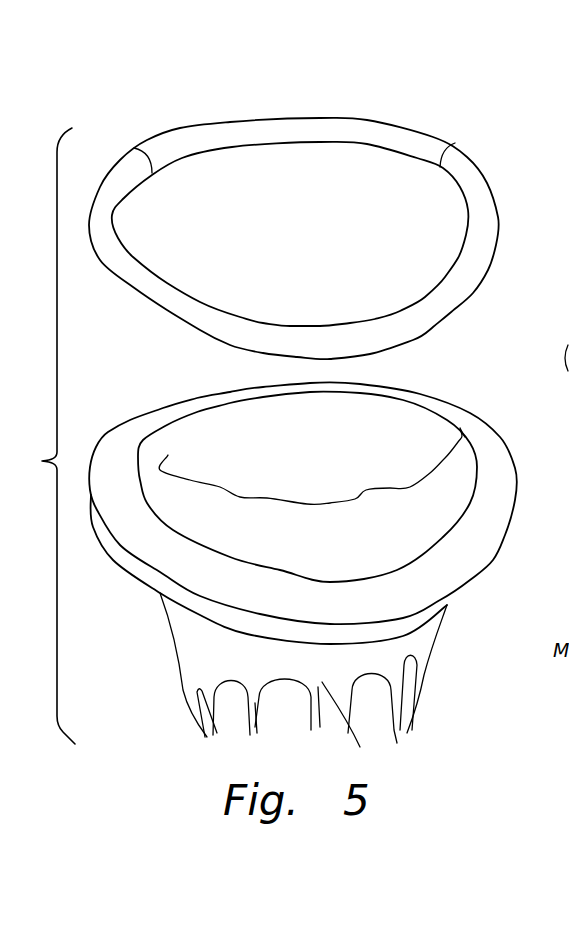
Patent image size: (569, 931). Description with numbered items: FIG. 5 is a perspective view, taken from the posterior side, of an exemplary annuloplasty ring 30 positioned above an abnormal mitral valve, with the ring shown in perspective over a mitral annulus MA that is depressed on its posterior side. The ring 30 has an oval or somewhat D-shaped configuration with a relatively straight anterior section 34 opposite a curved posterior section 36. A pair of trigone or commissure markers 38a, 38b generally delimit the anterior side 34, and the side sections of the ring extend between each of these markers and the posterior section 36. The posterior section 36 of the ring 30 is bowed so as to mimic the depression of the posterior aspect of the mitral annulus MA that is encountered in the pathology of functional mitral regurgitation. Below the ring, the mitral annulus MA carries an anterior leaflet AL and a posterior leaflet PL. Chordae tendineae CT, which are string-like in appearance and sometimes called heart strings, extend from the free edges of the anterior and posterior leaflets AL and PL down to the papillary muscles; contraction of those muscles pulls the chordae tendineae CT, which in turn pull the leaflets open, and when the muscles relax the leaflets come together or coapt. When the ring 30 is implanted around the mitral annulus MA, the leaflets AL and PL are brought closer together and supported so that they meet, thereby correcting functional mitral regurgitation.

The annuloplasty ring 30 is at (413, 113).
The anterior section 34 is at (293, 112).
The posterior section 36 is at (221, 349).
The trigone or commissure marker 38a is at (134, 148).
The trigone or commissure marker 38b is at (453, 143).
The mitral annulus MA is at (499, 441).
The anterior leaflet AL is at (338, 467).
The posterior leaflet PL is at (341, 540).
The chordae tendineae CT is at (418, 702).